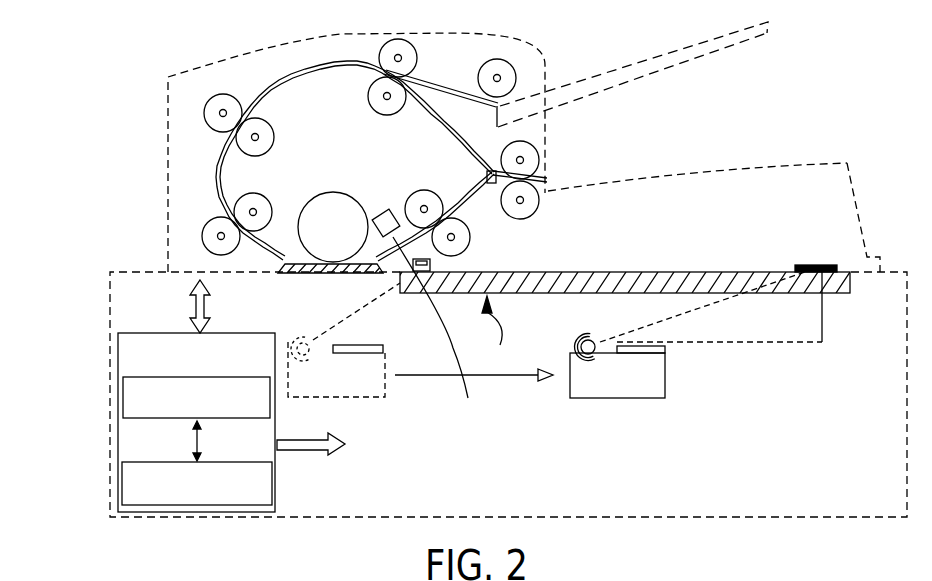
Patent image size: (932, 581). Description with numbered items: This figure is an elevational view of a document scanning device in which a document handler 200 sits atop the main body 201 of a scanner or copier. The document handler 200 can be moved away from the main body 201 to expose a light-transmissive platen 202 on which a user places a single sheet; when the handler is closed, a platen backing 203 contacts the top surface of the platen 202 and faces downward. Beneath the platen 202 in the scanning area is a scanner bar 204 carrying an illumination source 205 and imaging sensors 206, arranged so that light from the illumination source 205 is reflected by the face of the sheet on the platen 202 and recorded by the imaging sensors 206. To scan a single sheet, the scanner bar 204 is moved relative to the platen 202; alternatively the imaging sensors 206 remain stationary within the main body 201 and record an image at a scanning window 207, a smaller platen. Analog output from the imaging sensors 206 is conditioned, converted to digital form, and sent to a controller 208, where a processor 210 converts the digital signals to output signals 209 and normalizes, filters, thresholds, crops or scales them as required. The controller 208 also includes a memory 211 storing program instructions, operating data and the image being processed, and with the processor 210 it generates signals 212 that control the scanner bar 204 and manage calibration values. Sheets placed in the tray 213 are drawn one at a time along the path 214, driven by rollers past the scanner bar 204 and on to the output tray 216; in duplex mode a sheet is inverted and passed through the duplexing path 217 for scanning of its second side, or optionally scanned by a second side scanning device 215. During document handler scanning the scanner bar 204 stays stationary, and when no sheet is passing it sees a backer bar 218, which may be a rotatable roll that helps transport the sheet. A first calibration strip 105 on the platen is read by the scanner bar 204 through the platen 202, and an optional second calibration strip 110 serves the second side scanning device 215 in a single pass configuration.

The first calibration strip 105 is at (816, 265).
The second calibration strip 110 is at (437, 334).
The document handler 200 is at (166, 160).
The main body 201 is at (108, 312).
The light-transmissive platen 202 is at (499, 334).
The platen backing 203 is at (579, 271).
The scanner bar 204 is at (660, 377).
The illumination source 205 is at (576, 341).
The imaging sensors 206 is at (666, 349).
The scanning window 207 is at (294, 274).
The controller 208 is at (117, 346).
The output signals 209 is at (192, 310).
The processor 210 is at (122, 400).
The memory 211 is at (121, 483).
The signals 212 is at (307, 452).
The tray 213 is at (661, 72).
The path 214 is at (343, 62).
The second side scanning device 215 is at (380, 210).
The output tray 216 is at (620, 180).
The duplexing path 217 is at (457, 134).
The backer bar 218 is at (342, 192).